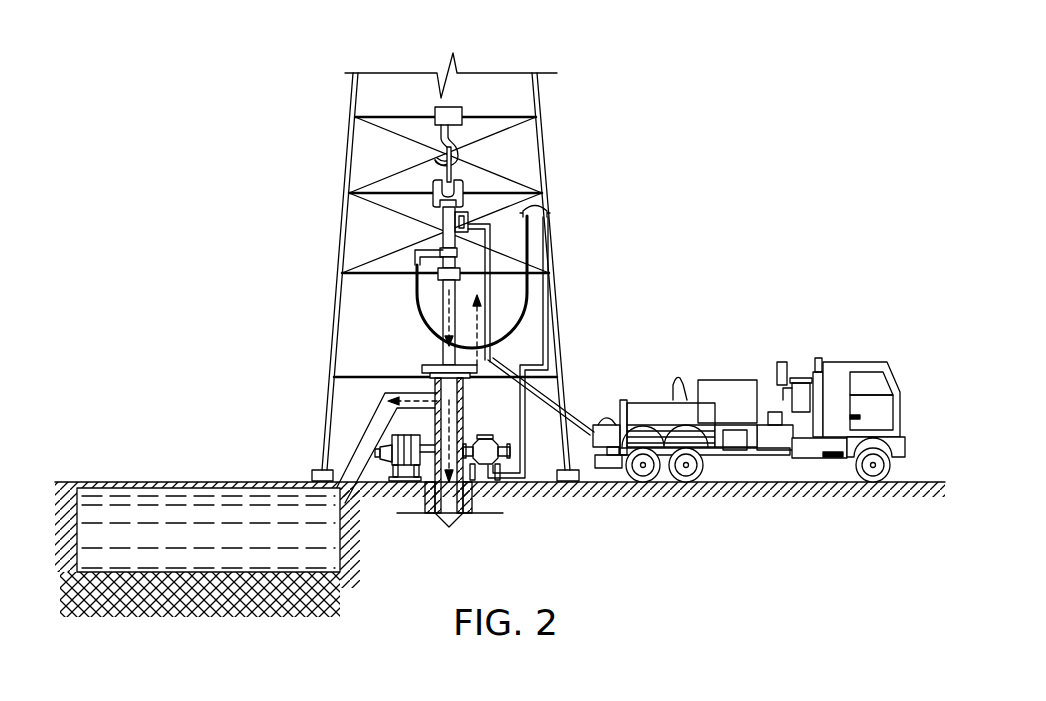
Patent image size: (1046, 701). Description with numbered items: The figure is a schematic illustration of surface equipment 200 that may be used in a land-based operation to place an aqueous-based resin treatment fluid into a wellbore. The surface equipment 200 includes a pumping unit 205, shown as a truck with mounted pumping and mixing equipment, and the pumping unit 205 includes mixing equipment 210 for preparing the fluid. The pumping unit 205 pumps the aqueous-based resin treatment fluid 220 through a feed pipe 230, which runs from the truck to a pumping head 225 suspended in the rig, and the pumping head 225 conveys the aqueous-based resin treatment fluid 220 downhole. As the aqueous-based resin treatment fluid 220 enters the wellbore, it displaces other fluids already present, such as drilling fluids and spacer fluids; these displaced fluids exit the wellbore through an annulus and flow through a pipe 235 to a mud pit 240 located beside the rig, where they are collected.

The surface equipment 200 is at (773, 92).
The pumping unit 205 is at (822, 462).
The mixing equipment 210 is at (737, 442).
The aqueous-based resin treatment fluid 220 is at (445, 317).
The pumping head 225 is at (477, 183).
The feed pipe 230 is at (556, 410).
The pipe 235 is at (362, 462).
The mud pit 240 is at (157, 573).